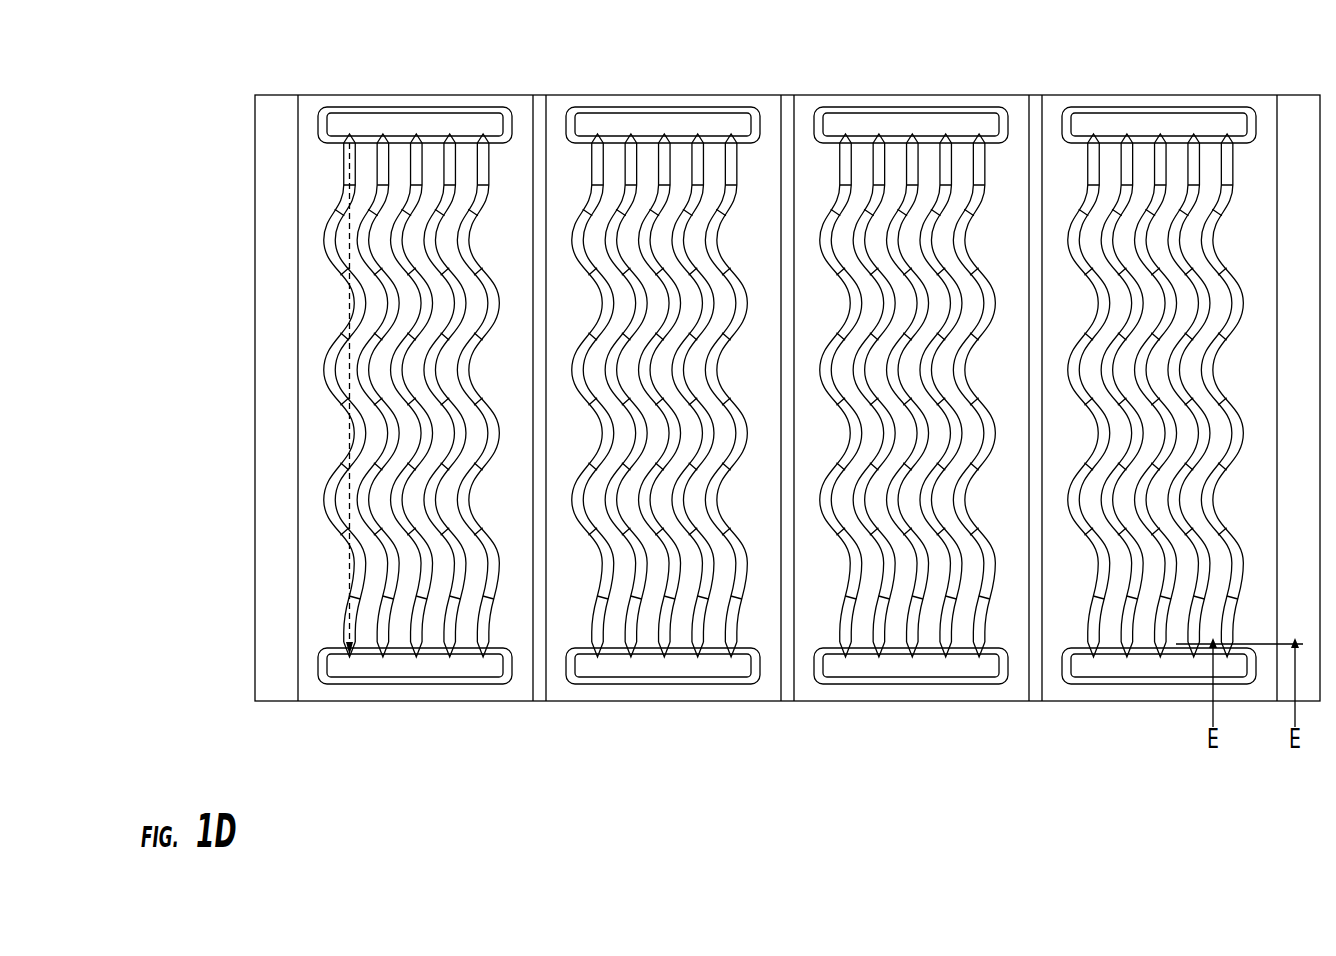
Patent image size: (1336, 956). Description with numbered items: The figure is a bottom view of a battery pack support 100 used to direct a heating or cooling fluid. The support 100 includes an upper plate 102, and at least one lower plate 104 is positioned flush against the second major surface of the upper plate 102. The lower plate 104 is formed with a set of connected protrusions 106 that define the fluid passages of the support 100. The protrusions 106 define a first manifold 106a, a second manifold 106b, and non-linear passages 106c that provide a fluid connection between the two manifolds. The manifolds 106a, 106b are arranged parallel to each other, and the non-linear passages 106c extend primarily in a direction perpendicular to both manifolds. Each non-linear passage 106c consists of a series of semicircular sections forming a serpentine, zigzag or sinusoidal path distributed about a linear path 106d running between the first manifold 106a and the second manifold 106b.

The battery pack support 100 is at (225, 63).
The upper plate 102 is at (218, 320).
The lower plate 104 is at (788, 467).
The protrusions 106 is at (367, 398).
The first manifold 106a is at (514, 127).
The second manifold 106b is at (282, 434).
The non-linear passages 106c is at (404, 553).
The linear path 106d is at (344, 242).